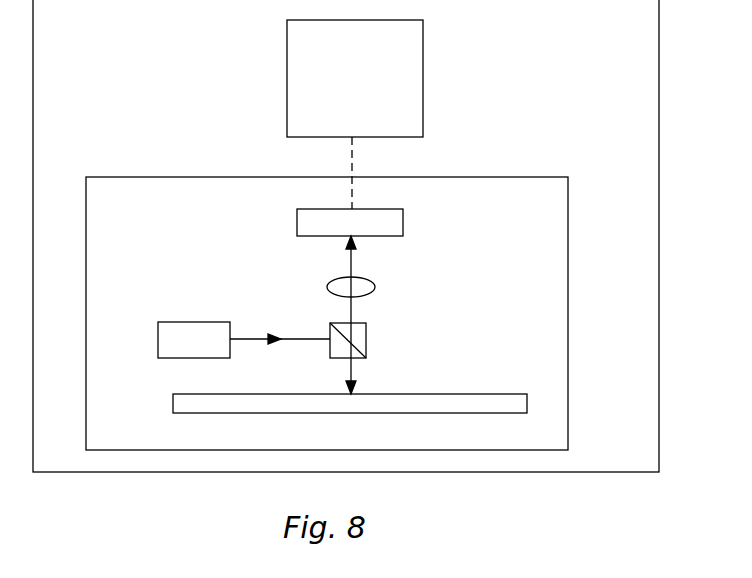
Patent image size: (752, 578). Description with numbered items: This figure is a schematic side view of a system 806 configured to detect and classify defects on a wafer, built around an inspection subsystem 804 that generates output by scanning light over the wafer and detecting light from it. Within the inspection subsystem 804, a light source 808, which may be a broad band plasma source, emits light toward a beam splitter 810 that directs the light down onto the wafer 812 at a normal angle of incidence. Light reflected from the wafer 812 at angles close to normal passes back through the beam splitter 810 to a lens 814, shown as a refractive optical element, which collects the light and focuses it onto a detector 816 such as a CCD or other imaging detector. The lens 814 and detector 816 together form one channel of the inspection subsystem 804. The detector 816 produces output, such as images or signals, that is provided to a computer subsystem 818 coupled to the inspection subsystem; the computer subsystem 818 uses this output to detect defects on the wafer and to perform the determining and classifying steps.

The inspection subsystem 804 is at (568, 277).
The system 806 is at (659, 120).
The light source 808 is at (183, 322).
The beam splitter 810 is at (367, 342).
The wafer 812 is at (185, 393).
The lens 814 is at (372, 279).
The detector 816 is at (298, 229).
The computer subsystem 818 is at (335, 116).